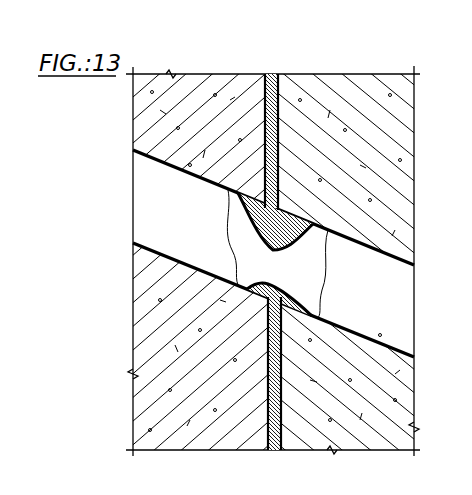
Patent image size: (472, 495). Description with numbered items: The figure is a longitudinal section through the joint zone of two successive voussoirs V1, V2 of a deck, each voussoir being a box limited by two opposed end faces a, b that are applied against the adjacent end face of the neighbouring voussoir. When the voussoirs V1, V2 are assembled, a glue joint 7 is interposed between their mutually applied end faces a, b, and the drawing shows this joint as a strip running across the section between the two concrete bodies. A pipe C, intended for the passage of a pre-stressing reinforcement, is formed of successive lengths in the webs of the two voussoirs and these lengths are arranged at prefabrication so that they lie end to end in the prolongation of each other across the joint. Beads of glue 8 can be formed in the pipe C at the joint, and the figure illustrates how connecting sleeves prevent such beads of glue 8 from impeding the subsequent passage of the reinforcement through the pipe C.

The voussoir V1 is at (208, 88).
The voussoir V2 is at (336, 90).
The glue joint 7 is at (236, 234).
The end face a is at (280, 130).
The end face b is at (265, 104).
The pipe C is at (168, 215).
The beads of glue 8 is at (295, 245).